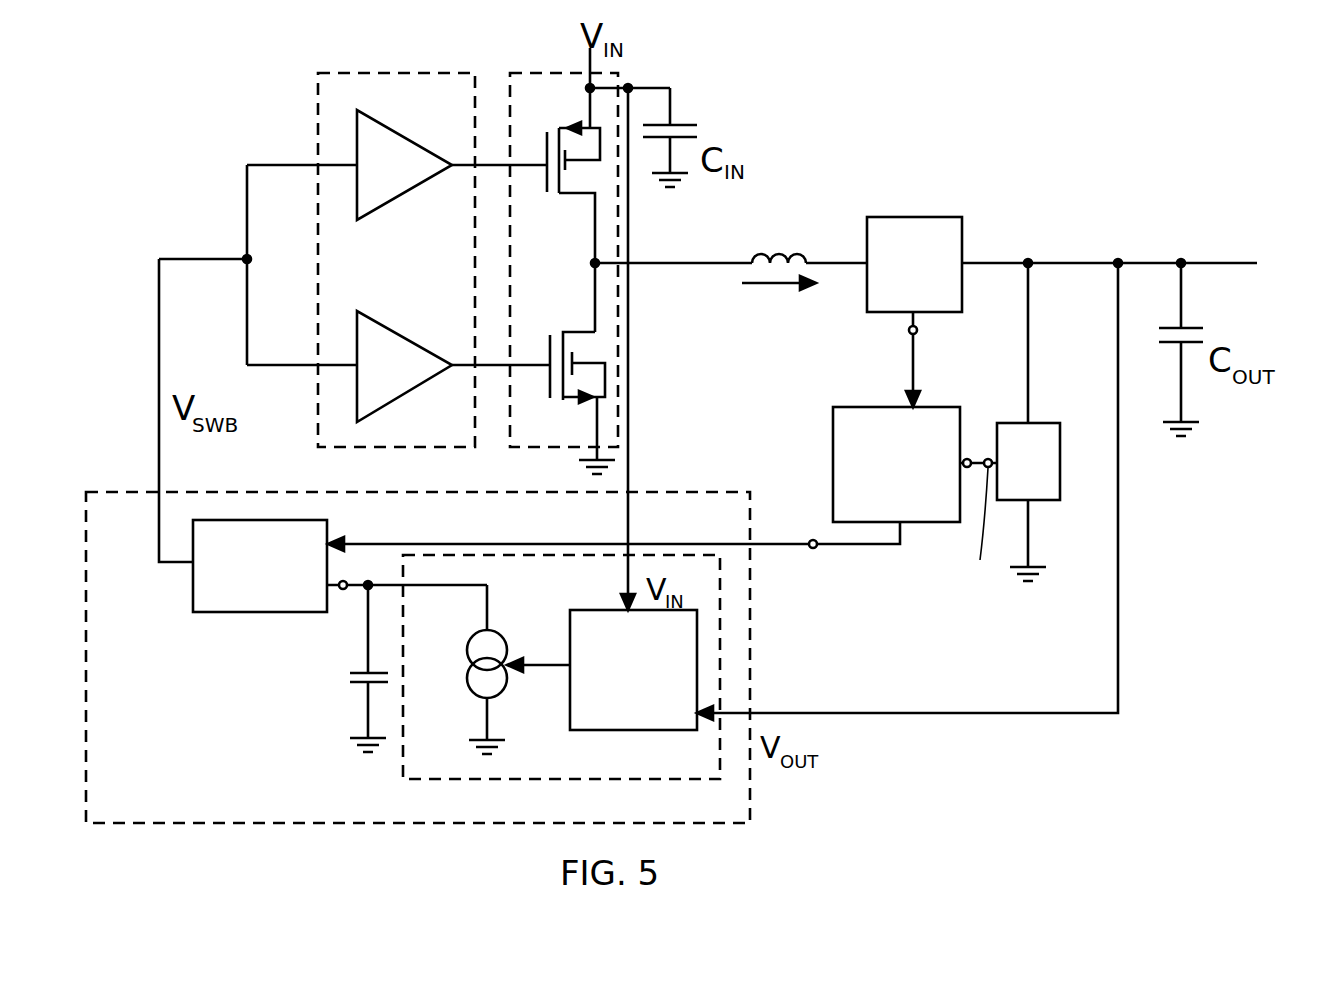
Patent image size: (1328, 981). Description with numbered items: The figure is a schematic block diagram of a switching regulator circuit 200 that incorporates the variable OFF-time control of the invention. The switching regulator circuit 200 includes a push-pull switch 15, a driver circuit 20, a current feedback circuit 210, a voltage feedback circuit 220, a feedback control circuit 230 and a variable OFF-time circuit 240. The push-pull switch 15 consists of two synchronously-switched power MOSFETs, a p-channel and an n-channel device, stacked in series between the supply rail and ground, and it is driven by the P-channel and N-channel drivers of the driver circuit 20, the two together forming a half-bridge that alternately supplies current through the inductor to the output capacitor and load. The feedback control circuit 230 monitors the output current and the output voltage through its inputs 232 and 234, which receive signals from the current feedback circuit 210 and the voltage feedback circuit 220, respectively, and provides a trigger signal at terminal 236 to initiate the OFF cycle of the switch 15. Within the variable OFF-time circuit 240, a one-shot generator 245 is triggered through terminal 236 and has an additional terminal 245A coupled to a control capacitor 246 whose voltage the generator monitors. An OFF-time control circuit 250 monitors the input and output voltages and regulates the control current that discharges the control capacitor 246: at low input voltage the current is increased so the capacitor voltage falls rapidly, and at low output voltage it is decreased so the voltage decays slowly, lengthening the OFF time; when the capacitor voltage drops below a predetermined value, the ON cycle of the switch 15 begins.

The driver circuit 20 is at (357, 73).
The push-pull switch 15 is at (553, 72).
The switching regulator circuit 200 is at (855, 170).
The current feedback circuit 210 is at (905, 217).
The input 232 is at (908, 331).
The feedback control circuit 230 is at (833, 415).
The input 234 is at (967, 458).
The voltage feedback circuit 220 is at (1040, 422).
The terminal 236 is at (813, 548).
The variable OFF-time circuit 240 is at (390, 832).
The one-shot generator 245 is at (215, 612).
The additional terminal 245A is at (343, 590).
The control capacitor 246 is at (360, 683).
The OFF-time control circuit 250 is at (400, 766).